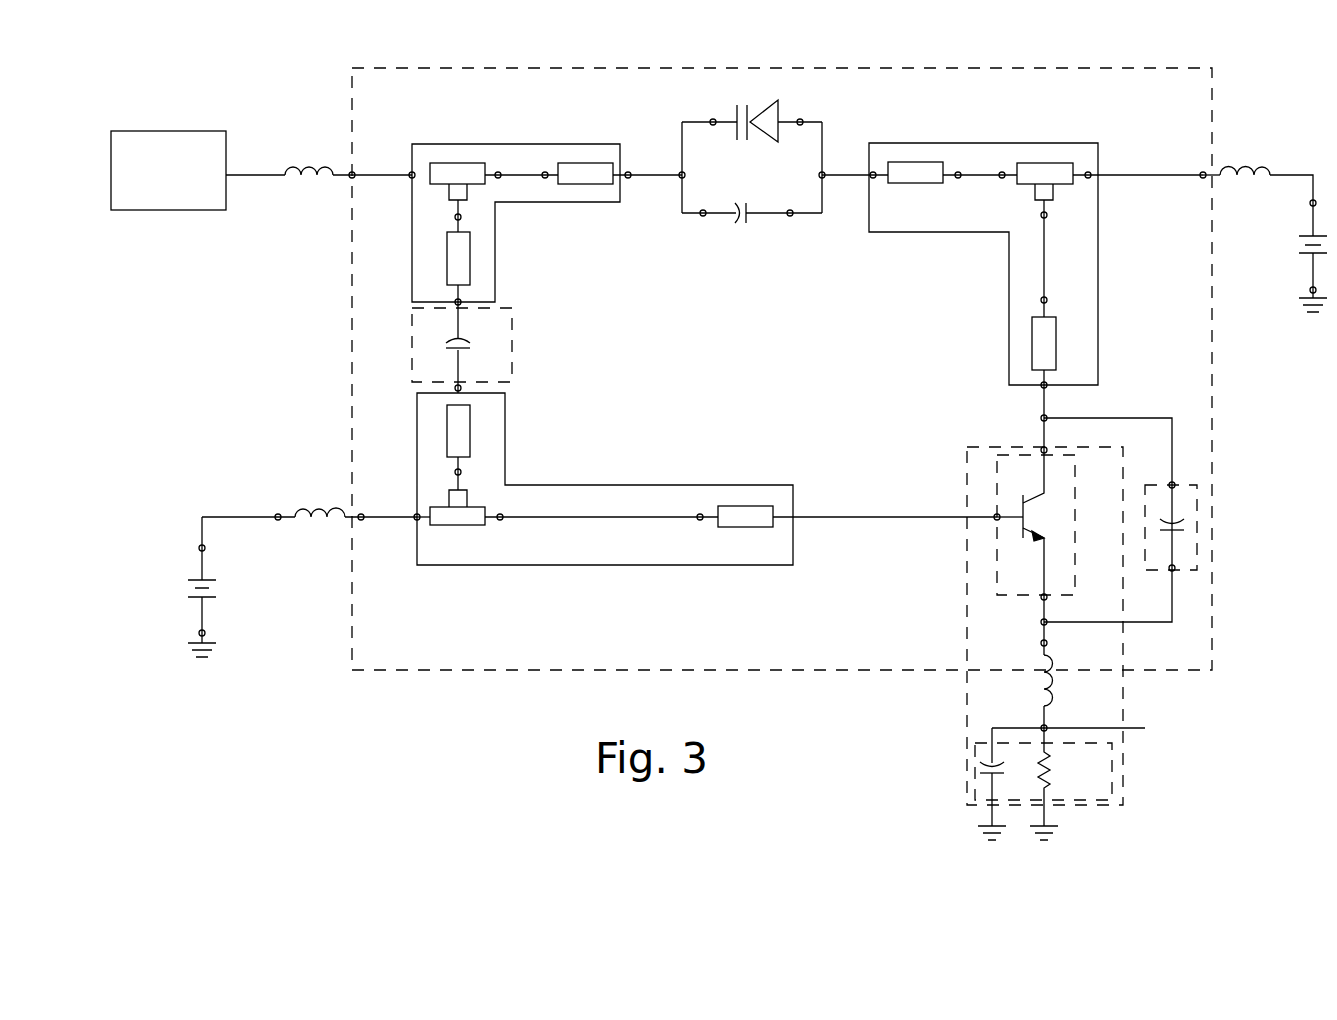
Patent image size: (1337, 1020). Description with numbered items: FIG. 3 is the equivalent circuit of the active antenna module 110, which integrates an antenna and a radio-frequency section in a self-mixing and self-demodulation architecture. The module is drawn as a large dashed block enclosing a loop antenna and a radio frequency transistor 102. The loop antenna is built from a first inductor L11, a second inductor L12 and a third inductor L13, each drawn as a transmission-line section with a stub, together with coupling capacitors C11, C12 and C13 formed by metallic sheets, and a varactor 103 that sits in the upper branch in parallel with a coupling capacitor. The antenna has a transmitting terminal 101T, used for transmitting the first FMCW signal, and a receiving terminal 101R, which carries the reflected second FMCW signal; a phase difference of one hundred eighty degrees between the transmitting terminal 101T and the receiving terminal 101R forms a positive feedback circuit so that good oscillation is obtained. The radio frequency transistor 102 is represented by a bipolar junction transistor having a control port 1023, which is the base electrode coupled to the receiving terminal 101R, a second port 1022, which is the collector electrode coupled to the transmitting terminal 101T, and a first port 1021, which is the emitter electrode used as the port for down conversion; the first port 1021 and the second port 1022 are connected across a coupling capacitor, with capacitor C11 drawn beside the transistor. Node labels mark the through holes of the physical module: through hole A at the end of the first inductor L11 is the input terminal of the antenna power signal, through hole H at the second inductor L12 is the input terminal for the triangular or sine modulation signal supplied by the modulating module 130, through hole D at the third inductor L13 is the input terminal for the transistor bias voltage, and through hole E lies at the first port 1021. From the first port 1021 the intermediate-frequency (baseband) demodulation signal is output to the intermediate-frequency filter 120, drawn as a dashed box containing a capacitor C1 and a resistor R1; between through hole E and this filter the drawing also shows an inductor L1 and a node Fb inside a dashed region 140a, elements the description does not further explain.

The active antenna module 110 is at (697, 68).
The modulating module 130 is at (172, 131).
The varactor 103 is at (780, 102).
The capacitor C12 is at (752, 235).
The second inductor L12 is at (497, 238).
The first inductor L11 is at (1099, 290).
The capacitor C13 is at (412, 338).
The third inductor L13 is at (417, 550).
The receiving terminal 101R is at (857, 530).
The transmitting terminal 101T is at (1011, 410).
The radio frequency transistor 102 is at (1015, 516).
The second port 1022 is at (1044, 450).
The control port 1023 is at (997, 515).
The first port 1021 is at (1044, 597).
The first capacitor C11 is at (1197, 517).
The through hole E is at (1030, 626).
The inductor L1 is at (1066, 693).
The bias circuit 140a is at (965, 698).
The feedback node Fb is at (1087, 725).
The intermediate-frequency filter 120 is at (1112, 775).
The capacitor C1 is at (1009, 784).
The resistor R1 is at (1060, 784).
The through hole H is at (366, 158).
The through hole D is at (371, 501).
The through hole A is at (1192, 158).